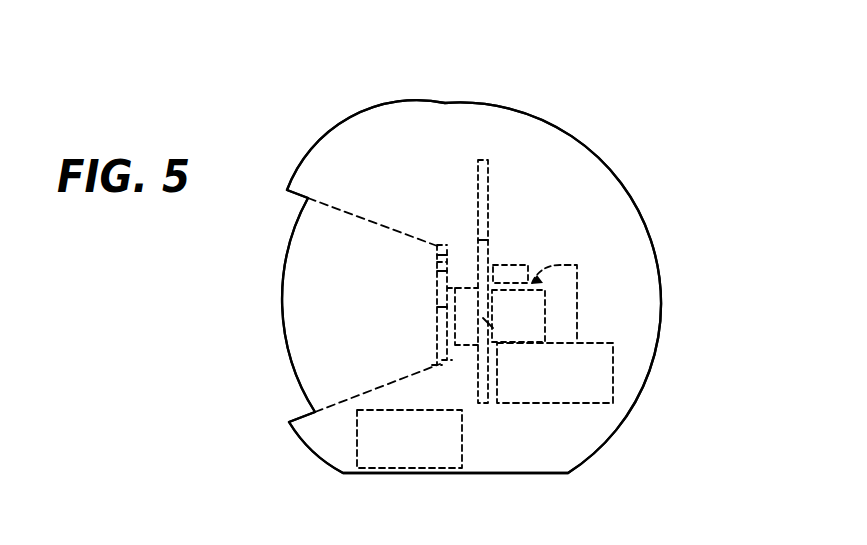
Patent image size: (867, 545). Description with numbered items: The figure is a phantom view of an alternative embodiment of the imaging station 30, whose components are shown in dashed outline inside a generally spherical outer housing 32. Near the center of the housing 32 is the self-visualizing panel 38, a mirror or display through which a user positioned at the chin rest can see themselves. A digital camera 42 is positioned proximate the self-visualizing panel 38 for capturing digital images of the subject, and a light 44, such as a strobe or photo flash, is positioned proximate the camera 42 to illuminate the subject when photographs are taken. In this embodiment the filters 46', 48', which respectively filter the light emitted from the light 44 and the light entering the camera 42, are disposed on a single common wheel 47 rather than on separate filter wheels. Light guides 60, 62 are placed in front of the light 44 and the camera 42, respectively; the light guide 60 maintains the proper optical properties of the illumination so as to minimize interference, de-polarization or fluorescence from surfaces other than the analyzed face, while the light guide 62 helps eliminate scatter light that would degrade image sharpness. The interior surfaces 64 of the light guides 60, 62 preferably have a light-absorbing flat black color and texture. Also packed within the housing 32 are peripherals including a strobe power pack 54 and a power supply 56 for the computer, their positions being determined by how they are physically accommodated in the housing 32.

The imaging station 30 is at (697, 300).
The outer housing 32 is at (432, 104).
The self-visualizing panel 38 is at (437, 366).
The digital camera 42 is at (572, 308).
The light 44 is at (516, 268).
The filter 46' is at (561, 180).
The common wheel 47 is at (485, 160).
The filter 48' is at (577, 411).
The strobe power pack 54 is at (595, 380).
The power supply 56 is at (378, 442).
The light guide 60 is at (446, 271).
The light guide 62 is at (446, 307).
The interior surfaces 64 is at (441, 261).